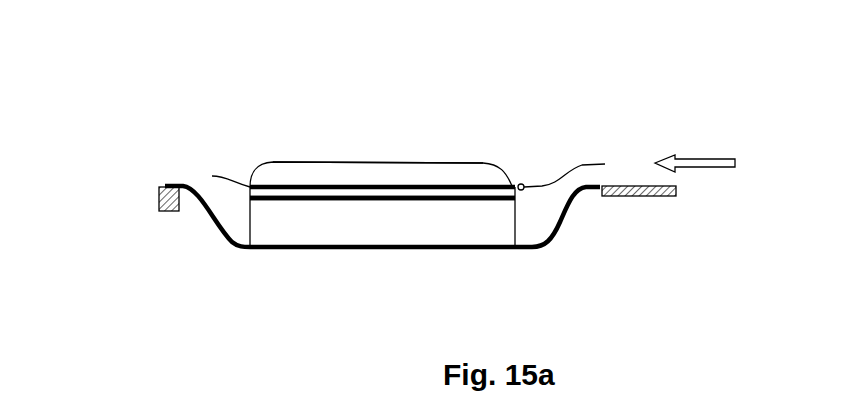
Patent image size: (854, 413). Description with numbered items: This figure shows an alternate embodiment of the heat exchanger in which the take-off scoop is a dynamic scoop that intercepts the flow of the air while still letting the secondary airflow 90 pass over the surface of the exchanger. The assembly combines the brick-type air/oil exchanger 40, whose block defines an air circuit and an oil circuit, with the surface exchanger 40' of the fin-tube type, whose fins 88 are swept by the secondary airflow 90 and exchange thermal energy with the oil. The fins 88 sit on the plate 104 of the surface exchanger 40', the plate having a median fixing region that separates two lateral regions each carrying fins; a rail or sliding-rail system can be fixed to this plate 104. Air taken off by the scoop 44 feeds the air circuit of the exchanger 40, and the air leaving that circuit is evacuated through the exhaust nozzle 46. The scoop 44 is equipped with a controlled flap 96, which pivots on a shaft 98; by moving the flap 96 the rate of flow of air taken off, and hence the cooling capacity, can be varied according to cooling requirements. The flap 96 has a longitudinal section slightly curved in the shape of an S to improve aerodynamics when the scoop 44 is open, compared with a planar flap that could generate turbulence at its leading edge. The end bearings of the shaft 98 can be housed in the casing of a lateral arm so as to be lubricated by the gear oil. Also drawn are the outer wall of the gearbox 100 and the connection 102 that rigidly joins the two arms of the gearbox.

The heat exchanger 40 is at (391, 247).
The surface heat exchanger 40' is at (381, 132).
The scoop 44 is at (558, 138).
The exhaust nozzle 46 is at (194, 174).
The fins 88 is at (394, 154).
The secondary airflow 90 is at (716, 145).
The flap 96 is at (594, 151).
The shaft 98 is at (523, 182).
The outer wall of the gearbox 100 is at (672, 200).
The connection 102 is at (144, 200).
The plate 104 is at (330, 200).